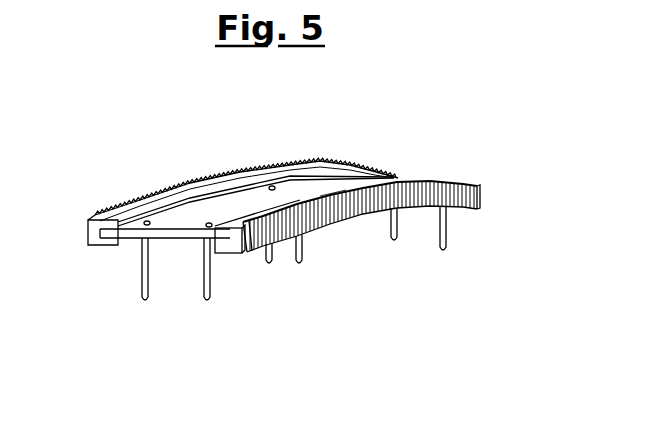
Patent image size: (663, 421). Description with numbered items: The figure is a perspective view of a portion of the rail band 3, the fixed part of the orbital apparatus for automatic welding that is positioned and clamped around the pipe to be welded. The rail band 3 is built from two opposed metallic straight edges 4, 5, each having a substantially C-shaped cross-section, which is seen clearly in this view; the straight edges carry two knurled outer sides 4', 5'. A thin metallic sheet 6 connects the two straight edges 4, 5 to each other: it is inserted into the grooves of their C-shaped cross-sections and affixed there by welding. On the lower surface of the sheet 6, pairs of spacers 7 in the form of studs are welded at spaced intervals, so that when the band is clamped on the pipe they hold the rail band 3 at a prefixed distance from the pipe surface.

The rail band 3 is at (310, 162).
The straight edge 4 is at (361, 196).
The knurled outer side 4' is at (344, 224).
The straight edge 5 is at (172, 195).
The knurled outer side 5' is at (83, 232).
The thin metallic sheet 6 is at (192, 212).
The spacers 7 is at (142, 283).